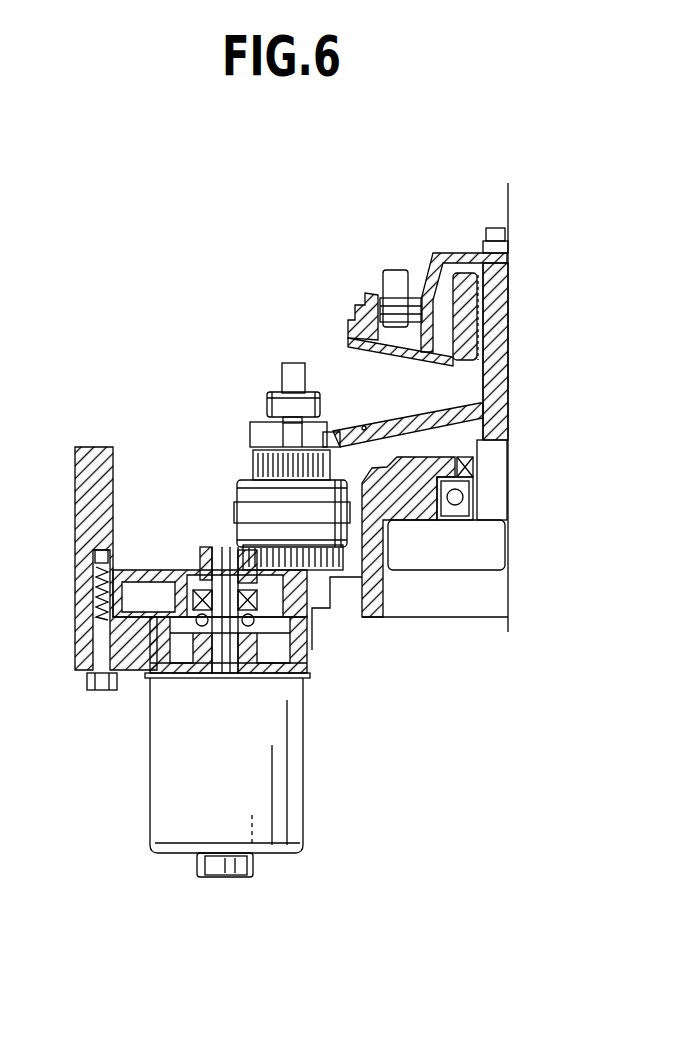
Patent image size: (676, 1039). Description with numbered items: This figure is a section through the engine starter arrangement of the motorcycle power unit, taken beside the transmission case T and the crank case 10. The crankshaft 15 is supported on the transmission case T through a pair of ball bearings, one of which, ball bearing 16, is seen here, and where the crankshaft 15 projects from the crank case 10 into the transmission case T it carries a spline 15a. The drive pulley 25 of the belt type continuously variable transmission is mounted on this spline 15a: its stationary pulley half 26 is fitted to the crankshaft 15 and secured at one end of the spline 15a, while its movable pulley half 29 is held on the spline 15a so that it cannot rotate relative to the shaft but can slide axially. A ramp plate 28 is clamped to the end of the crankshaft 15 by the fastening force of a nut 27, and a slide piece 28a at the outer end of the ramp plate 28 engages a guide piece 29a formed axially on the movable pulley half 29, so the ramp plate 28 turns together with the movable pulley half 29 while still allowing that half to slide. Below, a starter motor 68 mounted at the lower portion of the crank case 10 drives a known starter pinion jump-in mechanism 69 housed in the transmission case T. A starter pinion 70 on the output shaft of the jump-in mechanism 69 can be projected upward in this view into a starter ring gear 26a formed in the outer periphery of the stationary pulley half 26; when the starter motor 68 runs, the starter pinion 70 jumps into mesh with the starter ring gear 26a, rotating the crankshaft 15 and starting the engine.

The transmission case T is at (82, 512).
The crank case 10 is at (417, 474).
The crankshaft 15 is at (500, 497).
The spline 15a is at (484, 383).
The ball bearing 16 is at (455, 520).
The drive pulley 25 is at (363, 425).
The stationary pulley half 26 is at (420, 411).
The starter ring gear 26a is at (333, 444).
The nut 27 is at (507, 236).
The ramp plate 28 is at (465, 252).
The slide piece 28a is at (420, 277).
The movable pulley half 29 is at (425, 358).
The guide piece 29a is at (390, 277).
The starter motor 68 is at (232, 777).
The starter pinion jump-in mechanism 69 is at (220, 494).
The starter pinion 70 is at (257, 463).